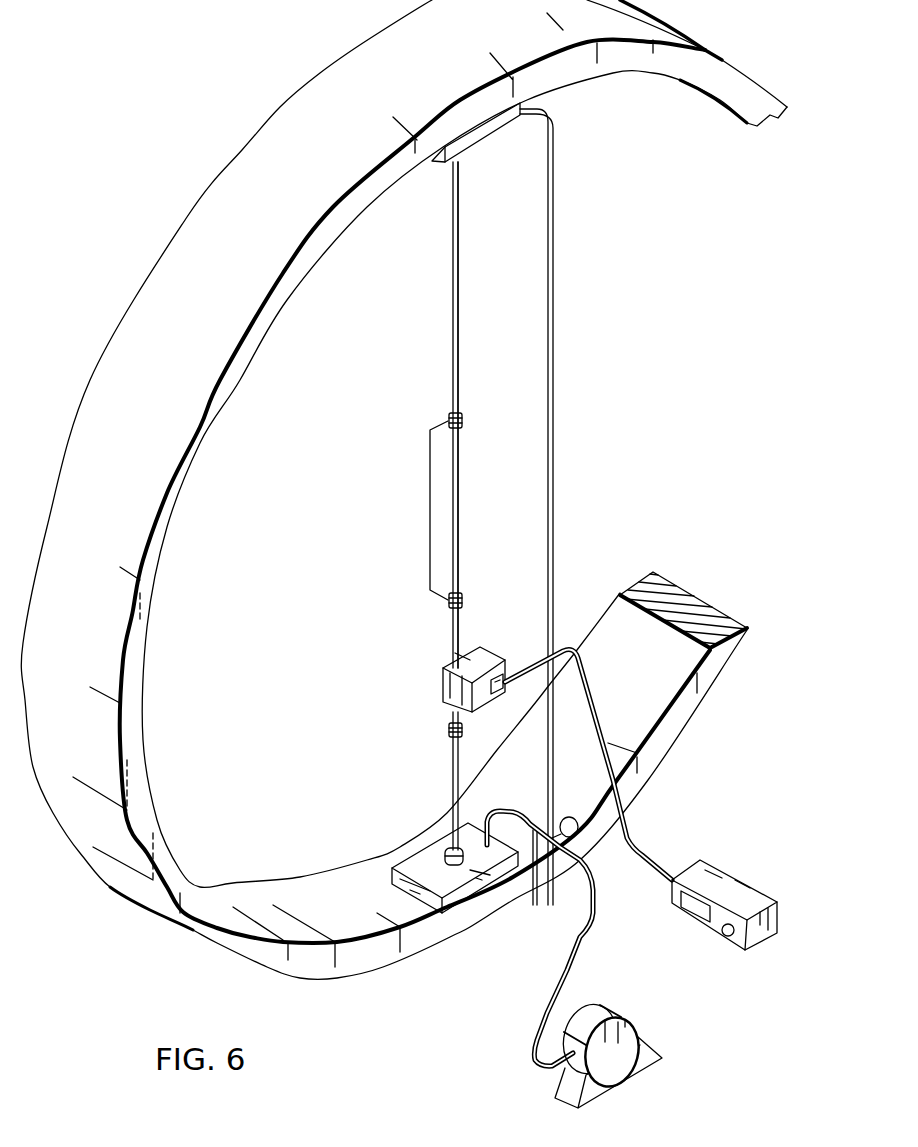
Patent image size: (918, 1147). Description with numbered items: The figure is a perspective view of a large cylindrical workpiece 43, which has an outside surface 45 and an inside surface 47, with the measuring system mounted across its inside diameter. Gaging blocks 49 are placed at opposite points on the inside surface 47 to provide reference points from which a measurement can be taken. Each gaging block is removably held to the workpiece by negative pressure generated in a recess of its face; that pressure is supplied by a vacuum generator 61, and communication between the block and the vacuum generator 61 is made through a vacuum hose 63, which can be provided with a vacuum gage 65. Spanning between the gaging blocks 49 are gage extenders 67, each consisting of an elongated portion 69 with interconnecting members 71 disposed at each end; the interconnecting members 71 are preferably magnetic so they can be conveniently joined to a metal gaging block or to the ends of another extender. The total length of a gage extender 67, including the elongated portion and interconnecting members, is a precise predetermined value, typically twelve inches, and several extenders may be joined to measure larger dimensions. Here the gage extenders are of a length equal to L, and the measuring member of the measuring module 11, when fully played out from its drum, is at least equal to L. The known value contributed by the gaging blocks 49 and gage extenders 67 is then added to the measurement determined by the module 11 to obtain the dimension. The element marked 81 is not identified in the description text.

The measuring module 11 is at (443, 668).
The cylindrical workpiece 43 is at (231, 390).
The outside surface 45 is at (250, 254).
The inside surface 47 is at (697, 673).
The gaging blocks 49 is at (497, 125).
The vacuum generator 61 is at (592, 1003).
The vacuum hose 63 is at (540, 587).
The vacuum gage 65 is at (573, 818).
The gage extenders 67 is at (458, 300).
The elongated portion 69 is at (458, 243).
The interconnecting members 71 is at (462, 416).
The control box 81 is at (694, 908).
The length L is at (430, 502).